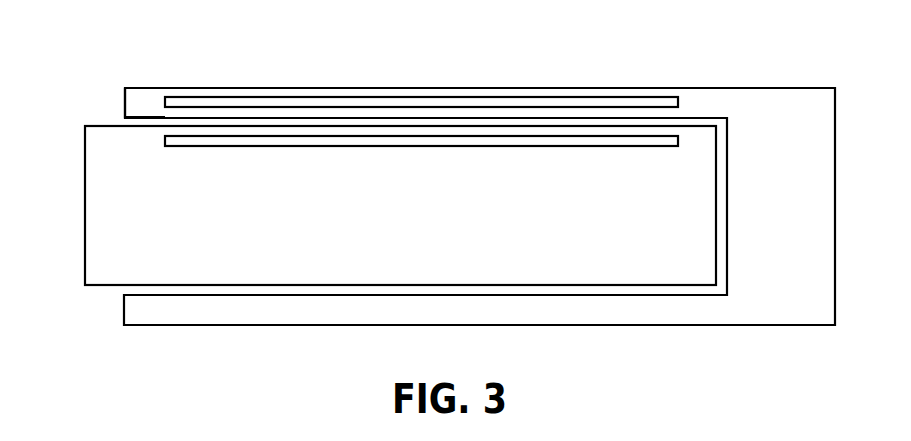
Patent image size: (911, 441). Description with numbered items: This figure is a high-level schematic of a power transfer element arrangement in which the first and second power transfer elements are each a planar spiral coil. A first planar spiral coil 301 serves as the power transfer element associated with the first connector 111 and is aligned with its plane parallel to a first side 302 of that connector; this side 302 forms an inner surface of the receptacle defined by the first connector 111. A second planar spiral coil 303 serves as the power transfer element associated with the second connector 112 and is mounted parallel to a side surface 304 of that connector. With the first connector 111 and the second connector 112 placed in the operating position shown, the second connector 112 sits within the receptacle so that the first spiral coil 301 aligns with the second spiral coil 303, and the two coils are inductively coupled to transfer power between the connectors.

The first connector 111 is at (835, 128).
The second connector 112 is at (85, 216).
The first planar spiral coil 301 is at (545, 95).
The first side 302 is at (139, 117).
The second planar spiral coil 303 is at (530, 147).
The side surface 304 is at (137, 126).